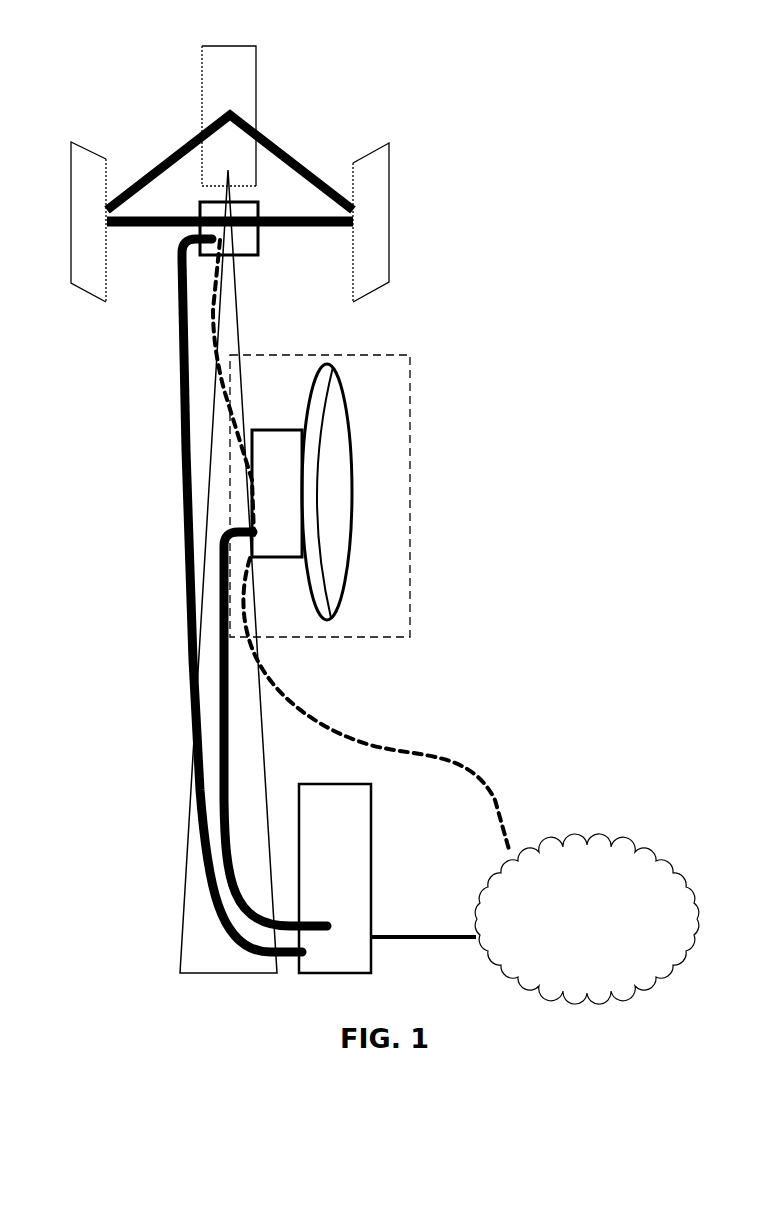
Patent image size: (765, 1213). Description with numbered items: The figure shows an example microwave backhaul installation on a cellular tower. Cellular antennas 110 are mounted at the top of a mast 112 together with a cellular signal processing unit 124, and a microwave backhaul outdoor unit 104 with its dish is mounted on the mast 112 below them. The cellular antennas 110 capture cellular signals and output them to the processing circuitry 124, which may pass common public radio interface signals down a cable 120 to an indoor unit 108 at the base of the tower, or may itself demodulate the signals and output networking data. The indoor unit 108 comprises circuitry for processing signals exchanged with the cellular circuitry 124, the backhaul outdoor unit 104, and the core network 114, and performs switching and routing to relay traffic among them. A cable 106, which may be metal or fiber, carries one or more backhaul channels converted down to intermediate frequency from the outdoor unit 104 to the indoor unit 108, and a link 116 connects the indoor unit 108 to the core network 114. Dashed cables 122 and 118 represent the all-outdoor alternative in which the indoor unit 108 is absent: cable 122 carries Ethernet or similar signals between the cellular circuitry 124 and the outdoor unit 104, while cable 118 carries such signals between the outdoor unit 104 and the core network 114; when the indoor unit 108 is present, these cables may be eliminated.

The microwave backhaul outdoor unit 104 is at (410, 357).
The cable 106 is at (217, 677).
The indoor unit 108 is at (321, 784).
The cellular antennas 110 is at (202, 46).
The mast 112 is at (184, 906).
The core network 114 is at (572, 946).
The backhaul link 116 is at (432, 926).
The cable 118 is at (372, 730).
The cable 120 is at (182, 541).
The cable 122 is at (227, 417).
The cellular signal processing unit 124 is at (258, 205).